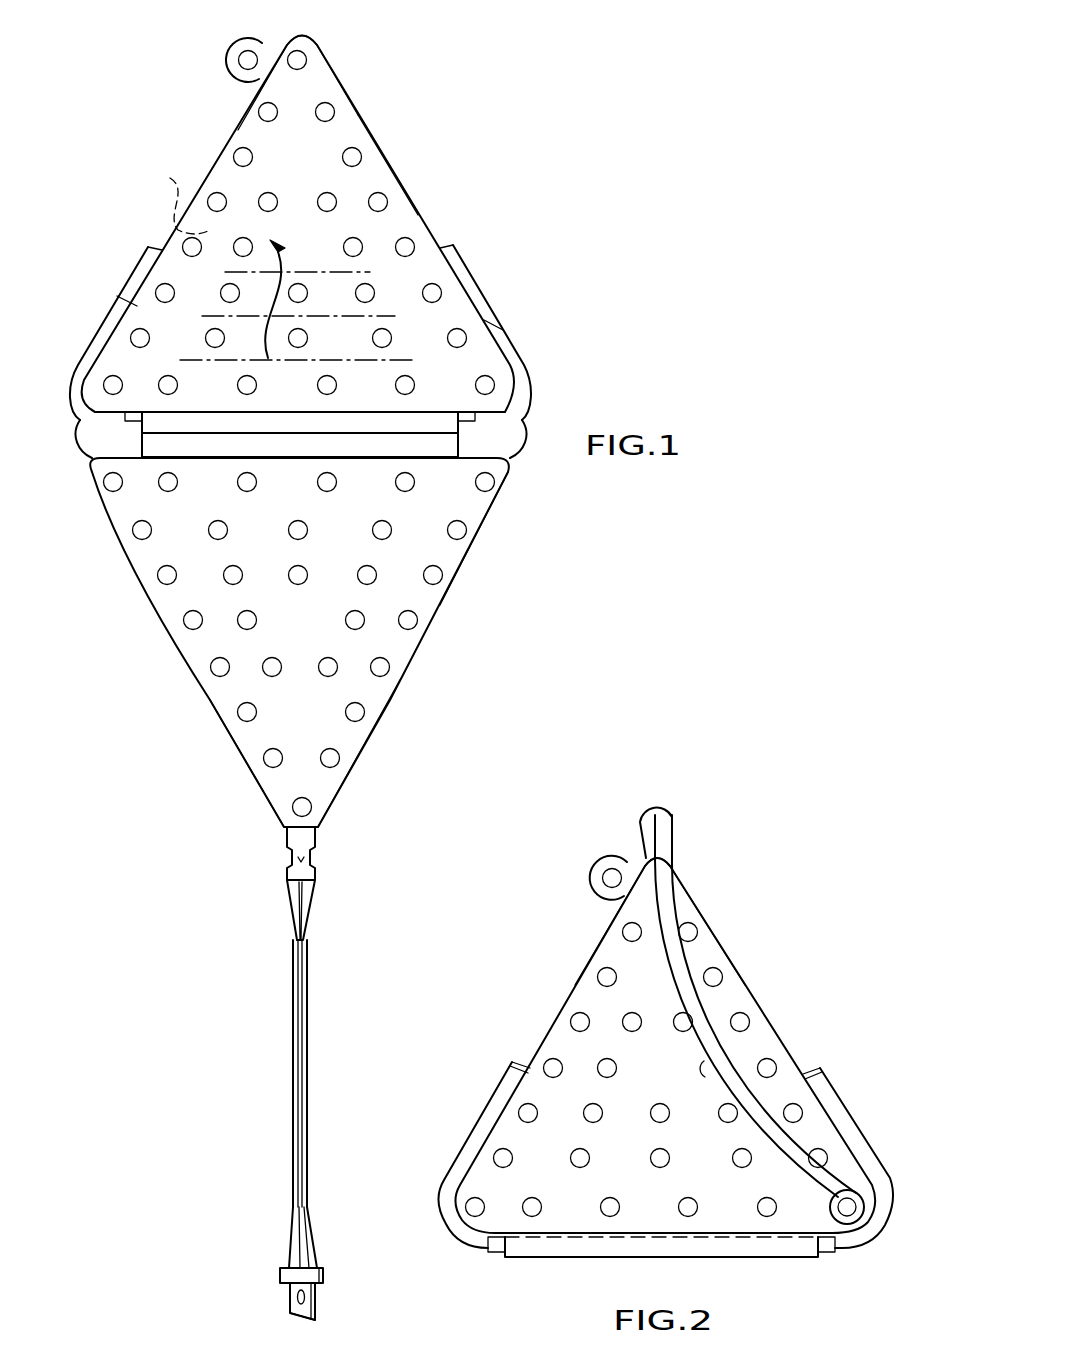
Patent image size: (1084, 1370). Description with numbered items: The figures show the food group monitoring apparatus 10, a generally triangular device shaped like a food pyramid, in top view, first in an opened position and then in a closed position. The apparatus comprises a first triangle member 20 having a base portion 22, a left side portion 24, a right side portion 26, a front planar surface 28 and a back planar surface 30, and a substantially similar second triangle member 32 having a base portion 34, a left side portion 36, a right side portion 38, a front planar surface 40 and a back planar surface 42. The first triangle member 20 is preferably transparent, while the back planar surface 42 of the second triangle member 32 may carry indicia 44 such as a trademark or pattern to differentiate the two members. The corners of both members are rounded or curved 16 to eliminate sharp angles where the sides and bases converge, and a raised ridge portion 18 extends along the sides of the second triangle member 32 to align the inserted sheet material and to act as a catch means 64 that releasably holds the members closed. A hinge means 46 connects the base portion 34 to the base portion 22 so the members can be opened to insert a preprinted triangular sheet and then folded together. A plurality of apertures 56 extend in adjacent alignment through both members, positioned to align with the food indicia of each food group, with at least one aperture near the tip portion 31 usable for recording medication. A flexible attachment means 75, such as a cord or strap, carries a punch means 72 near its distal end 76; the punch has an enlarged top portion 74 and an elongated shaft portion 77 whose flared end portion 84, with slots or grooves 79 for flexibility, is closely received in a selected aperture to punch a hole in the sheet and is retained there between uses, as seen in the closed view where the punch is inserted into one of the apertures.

In FIG. 1, the food group monitoring apparatus 10 is at (458, 171).
In FIG. 2, the food group monitoring apparatus 10 is at (790, 989).
In FIG. 1, the rounded or curved corners 16 is at (72, 434).
In FIG. 2, the rounded or curved corners 16 is at (680, 855).
In FIG. 1, the raised ridge portion 18 is at (130, 270).
In FIG. 2, the raised ridge portion 18 is at (480, 1115).
In FIG. 1, the first triangle member 20 is at (412, 664).
In FIG. 2, the first triangle member 20 is at (776, 1036).
In FIG. 1, the base portion 22 is at (445, 460).
In FIG. 2, the base portion 22 is at (628, 1237).
In FIG. 1, the left side portion 24 is at (224, 722).
In FIG. 2, the left side portion 24 is at (566, 1000).
In FIG. 1, the right side portion 26 is at (390, 710).
In FIG. 2, the right side portion 26 is at (708, 926).
In FIG. 2, the front planar surface 28 is at (650, 973).
In FIG. 1, the back planar surface 30 is at (436, 600).
In FIG. 1, the tip portion 31 is at (306, 36).
In FIG. 2, the tip portion 31 is at (640, 855).
In FIG. 1, the second triangle member 32 is at (395, 150).
In FIG. 1, the base portion 34 is at (450, 410).
In FIG. 1, the left side portion 36 is at (238, 127).
In FIG. 1, the right side portion 38 is at (370, 108).
In FIG. 1, the front planar surface 40 is at (338, 75).
In FIG. 1, the back planar surface 42 is at (176, 193).
In FIG. 1, the indicia 44 is at (298, 288).
In FIG. 1, the hinge means 46 is at (210, 433).
In FIG. 2, the hinge means 46 is at (730, 1258).
In FIG. 1, the apertures 56 is at (295, 58).
In FIG. 2, the apertures 56 is at (503, 1165).
In FIG. 1, the catch means 64 is at (118, 302).
In FIG. 2, the catch means 64 is at (507, 1070).
In FIG. 1, the punch means 72 is at (348, 1262).
In FIG. 2, the punch means 72 is at (866, 1196).
In FIG. 1, the enlarged top portion 74 is at (325, 1270).
In FIG. 1, the flexible attachment means 75 is at (308, 1067).
In FIG. 2, the flexible attachment means 75 is at (688, 992).
In FIG. 1, the distal end 76 is at (292, 1235).
In FIG. 1, the shaft portion 77 is at (318, 1298).
In FIG. 1, the slots or grooves 79 is at (297, 1298).
In FIG. 1, the flared end portion 84 is at (312, 1318).